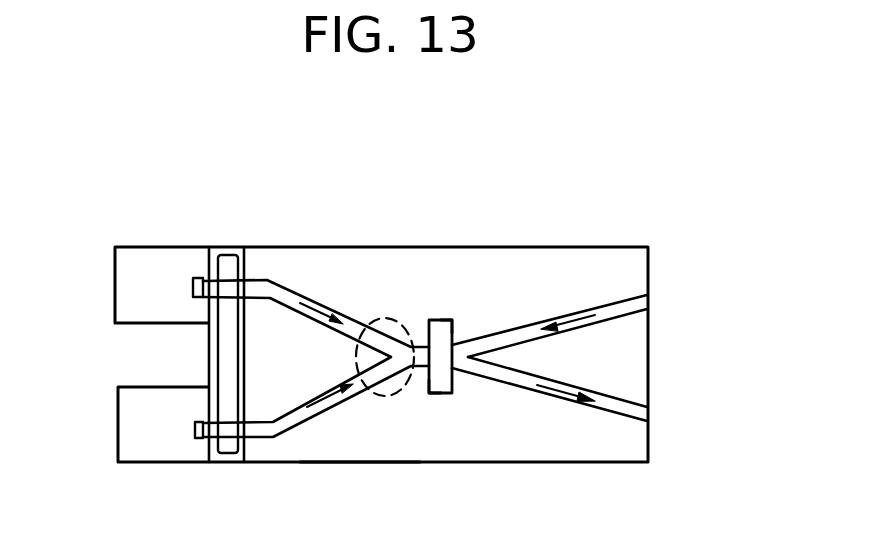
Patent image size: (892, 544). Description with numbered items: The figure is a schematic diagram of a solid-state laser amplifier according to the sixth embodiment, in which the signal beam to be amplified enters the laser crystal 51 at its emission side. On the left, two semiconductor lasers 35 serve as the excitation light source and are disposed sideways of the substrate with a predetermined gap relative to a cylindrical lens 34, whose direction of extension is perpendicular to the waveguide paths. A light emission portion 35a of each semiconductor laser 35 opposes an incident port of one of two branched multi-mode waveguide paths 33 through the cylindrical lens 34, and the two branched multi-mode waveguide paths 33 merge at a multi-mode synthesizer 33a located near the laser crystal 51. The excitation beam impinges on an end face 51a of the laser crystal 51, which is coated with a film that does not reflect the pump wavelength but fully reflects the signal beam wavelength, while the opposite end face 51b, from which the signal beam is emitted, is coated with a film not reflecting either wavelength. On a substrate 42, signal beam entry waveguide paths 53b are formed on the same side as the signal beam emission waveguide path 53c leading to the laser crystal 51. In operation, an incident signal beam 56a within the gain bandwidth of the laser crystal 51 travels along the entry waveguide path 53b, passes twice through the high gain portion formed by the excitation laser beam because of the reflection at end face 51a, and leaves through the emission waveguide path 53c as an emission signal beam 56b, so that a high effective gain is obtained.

The multi-mode waveguide path 33 is at (283, 290).
The multi-mode synthesizer 33a is at (383, 318).
The cylindrical lens 34 is at (228, 452).
The semiconductor laser 35 is at (132, 417).
The light emission portion 35a is at (200, 438).
The substrate 42 is at (362, 440).
The laser crystal 51 is at (440, 320).
The end face 51a is at (424, 382).
The end face 51b is at (453, 343).
The signal beam entry waveguide path 53b is at (625, 307).
The signal beam emission waveguide path 53c is at (510, 377).
The incident signal beam 56a is at (575, 318).
The emission signal beam 56b is at (560, 393).